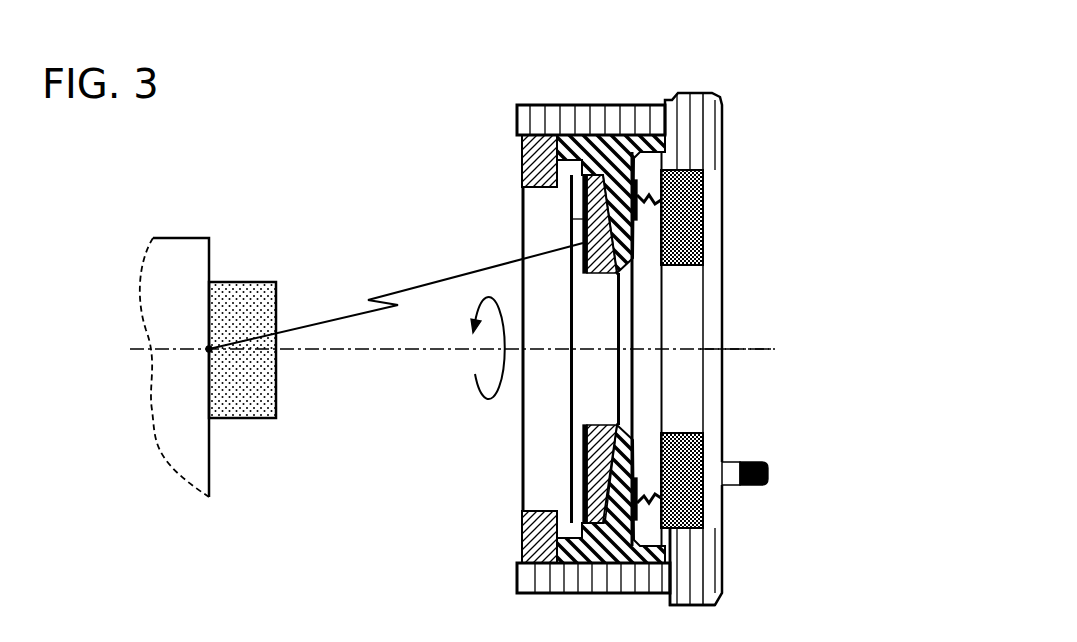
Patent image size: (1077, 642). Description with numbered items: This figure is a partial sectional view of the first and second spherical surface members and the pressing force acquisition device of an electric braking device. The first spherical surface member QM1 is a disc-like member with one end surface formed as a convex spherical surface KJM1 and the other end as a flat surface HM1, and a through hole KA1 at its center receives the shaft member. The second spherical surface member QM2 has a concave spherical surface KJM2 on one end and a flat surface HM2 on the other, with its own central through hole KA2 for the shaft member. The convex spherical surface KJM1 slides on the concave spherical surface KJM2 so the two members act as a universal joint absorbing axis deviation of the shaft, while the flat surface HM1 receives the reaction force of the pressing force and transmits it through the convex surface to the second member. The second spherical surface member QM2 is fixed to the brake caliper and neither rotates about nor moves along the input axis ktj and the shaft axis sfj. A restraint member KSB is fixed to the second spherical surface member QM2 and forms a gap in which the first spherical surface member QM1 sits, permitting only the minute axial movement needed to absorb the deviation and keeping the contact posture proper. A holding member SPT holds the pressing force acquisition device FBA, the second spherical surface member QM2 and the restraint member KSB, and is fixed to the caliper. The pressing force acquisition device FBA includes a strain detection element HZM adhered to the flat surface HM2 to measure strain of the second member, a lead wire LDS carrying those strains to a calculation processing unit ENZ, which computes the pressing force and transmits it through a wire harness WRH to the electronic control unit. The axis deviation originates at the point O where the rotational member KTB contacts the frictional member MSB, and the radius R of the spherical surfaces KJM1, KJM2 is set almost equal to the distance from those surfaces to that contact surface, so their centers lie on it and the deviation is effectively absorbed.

The restraint member KSB is at (520, 160).
The second spherical surface member QM2 is at (610, 165).
The first spherical surface member QM1 is at (608, 455).
The pressing force acquisition device FBA is at (655, 170).
The lead wire LDS is at (665, 196).
The through hole KA1 is at (610, 297).
The through hole KA2 is at (627, 318).
The input axis ktj is at (747, 348).
The convex spherical surface KJM1 is at (617, 425).
The concave spherical surface KJM2 is at (602, 483).
The flat surface HM1 is at (583, 527).
The flat surface HM2 is at (636, 480).
The strain detection element HZM is at (662, 433).
The wire harness WRH is at (765, 488).
The calculation processing unit ENZ is at (705, 507).
The holding member SPT is at (683, 568).
The rotational member KTB is at (166, 238).
The frictional member MSB is at (248, 282).
The point O is at (199, 336).
The radius R is at (396, 296).
The shaft axis sfj is at (397, 349).